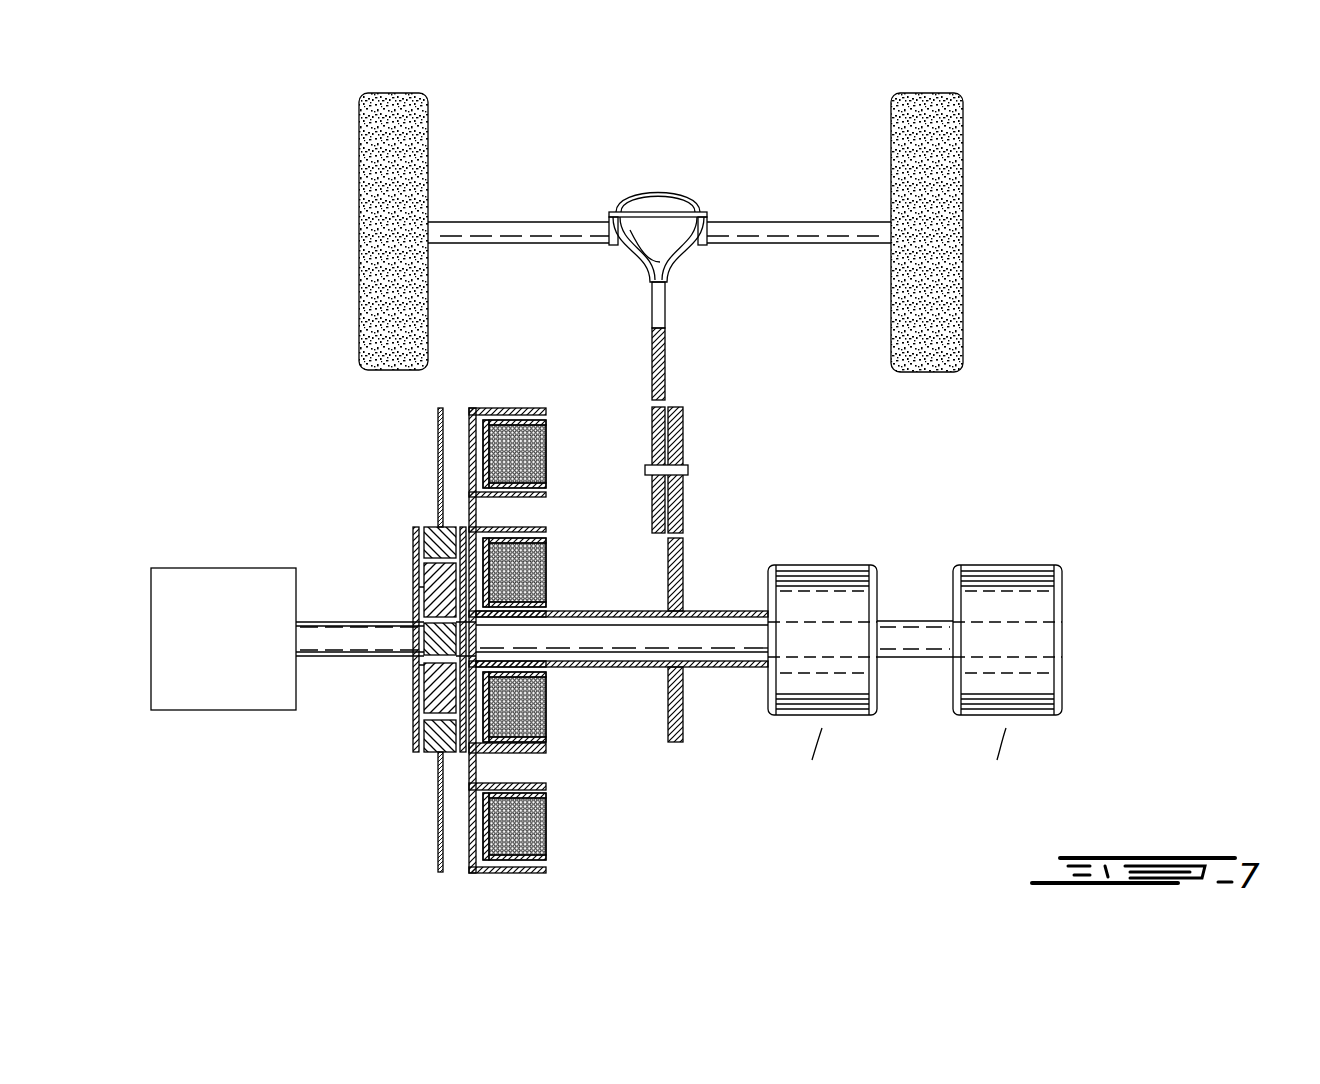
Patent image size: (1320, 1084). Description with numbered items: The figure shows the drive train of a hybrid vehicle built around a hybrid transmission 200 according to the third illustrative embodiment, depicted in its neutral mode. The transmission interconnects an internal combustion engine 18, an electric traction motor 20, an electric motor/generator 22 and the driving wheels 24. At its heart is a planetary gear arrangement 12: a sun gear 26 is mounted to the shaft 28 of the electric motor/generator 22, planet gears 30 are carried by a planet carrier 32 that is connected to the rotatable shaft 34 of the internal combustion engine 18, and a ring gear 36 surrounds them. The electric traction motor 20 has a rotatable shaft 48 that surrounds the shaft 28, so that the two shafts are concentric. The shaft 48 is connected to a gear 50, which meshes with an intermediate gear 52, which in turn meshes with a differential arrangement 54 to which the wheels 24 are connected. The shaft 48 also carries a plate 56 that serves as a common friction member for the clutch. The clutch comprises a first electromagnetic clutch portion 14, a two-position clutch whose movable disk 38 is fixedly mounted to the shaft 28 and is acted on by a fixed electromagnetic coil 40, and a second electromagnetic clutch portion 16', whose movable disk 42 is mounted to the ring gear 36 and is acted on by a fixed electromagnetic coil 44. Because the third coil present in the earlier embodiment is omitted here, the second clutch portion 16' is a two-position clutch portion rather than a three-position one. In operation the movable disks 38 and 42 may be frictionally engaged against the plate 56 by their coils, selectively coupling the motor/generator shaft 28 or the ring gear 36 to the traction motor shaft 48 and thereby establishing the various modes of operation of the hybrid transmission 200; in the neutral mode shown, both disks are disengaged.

The planetary gear arrangement 12 is at (379, 644).
The first electromagnetic clutch portion 14 is at (566, 709).
The two-position clutch portion 16' is at (562, 842).
The internal combustion engine 18 is at (190, 593).
The electric traction motor 20 is at (832, 585).
The electric motor/generator 22 is at (1008, 585).
The driving wheels 24 is at (376, 143).
The sun gear 26 is at (424, 640).
The shaft 28 is at (913, 632).
The planet gears 30 is at (432, 562).
The planet carrier 32 is at (413, 578).
The rotatable shaft 34 is at (345, 637).
The ring gear 36 is at (452, 524).
The movable disk 38 is at (470, 527).
The fixed electromagnetic coil 40 is at (523, 575).
The movable disk 42 is at (442, 860).
The fixed electromagnetic coil 44 is at (535, 835).
The rotatable shaft 48 is at (740, 610).
The gear 50 is at (683, 553).
The intermediate gear 52 is at (678, 425).
The differential arrangement 54 is at (662, 233).
The plate 56 is at (463, 420).
The hybrid transmission 200 is at (452, 627).